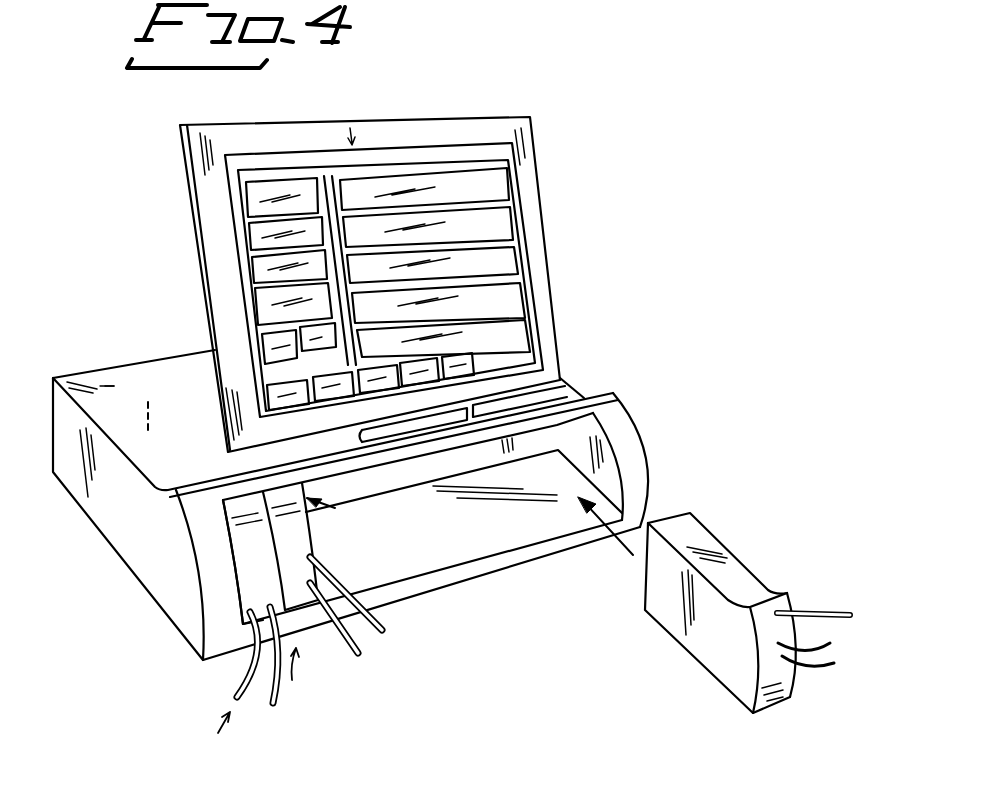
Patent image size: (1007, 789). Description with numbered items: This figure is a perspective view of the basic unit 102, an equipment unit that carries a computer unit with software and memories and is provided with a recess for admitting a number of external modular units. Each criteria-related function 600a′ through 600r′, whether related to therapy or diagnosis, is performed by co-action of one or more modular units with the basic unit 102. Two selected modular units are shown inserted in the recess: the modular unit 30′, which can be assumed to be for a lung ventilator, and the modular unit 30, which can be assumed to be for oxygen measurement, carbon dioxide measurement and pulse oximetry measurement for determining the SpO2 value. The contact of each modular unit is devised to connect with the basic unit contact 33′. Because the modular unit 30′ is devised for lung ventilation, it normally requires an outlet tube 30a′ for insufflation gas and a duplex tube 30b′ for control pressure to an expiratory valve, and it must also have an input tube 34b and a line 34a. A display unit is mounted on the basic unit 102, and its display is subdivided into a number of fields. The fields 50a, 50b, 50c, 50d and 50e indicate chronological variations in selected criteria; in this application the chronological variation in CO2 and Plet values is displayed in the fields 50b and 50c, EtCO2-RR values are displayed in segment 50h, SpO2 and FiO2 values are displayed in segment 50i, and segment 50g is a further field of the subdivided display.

The display field 50a is at (502, 183).
The display field 50b is at (506, 222).
The display field 50c is at (508, 256).
The display field 50d is at (515, 286).
The display field 50e is at (522, 321).
The display segment 50g is at (244, 193).
The display segment 50h is at (249, 232).
The display segment 50i is at (253, 265).
The basic unit 102 is at (170, 353).
The criteria-related function 600a′ is at (148, 386).
The criteria-related function 600r′ is at (161, 433).
The modular unit 30 is at (308, 532).
The modular unit 30′ is at (250, 577).
The basic unit contact 33′ is at (335, 508).
The outlet tube 30a′ is at (243, 677).
The duplex tube 30b′ is at (272, 676).
The line 34a is at (360, 656).
The input tube 34b is at (385, 633).